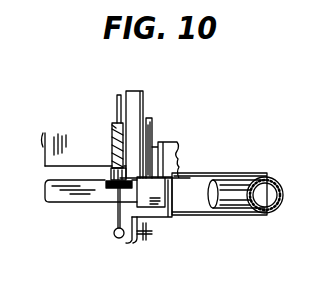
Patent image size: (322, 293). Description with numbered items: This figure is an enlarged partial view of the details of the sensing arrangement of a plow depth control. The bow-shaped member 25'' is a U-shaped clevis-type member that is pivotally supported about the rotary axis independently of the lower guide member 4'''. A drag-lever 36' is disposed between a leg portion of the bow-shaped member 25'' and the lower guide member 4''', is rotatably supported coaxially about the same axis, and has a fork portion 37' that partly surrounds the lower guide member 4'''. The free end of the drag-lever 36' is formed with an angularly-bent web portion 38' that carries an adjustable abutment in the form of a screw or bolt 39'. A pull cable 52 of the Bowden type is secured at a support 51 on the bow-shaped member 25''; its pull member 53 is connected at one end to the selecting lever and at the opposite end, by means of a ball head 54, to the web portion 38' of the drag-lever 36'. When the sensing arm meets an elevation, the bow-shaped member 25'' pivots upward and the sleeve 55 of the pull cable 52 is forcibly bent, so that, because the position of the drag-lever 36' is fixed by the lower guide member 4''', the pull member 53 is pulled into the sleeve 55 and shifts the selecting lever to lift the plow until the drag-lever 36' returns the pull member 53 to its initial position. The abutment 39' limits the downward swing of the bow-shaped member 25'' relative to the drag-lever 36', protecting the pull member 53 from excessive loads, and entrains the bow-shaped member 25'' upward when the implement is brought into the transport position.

The lower guide member 4''' is at (276, 210).
The bow-shaped member 25'' is at (85, 210).
The drag-lever 36' is at (172, 155).
The fork portion 37' is at (236, 212).
The angularly-bent web portion 38' is at (167, 215).
The screw or bolt 39' is at (152, 249).
The support 51 is at (104, 202).
The pull cable 52 is at (110, 128).
The pull member 53 is at (120, 98).
The ball head 54 is at (117, 238).
The sleeve 55 is at (126, 134).